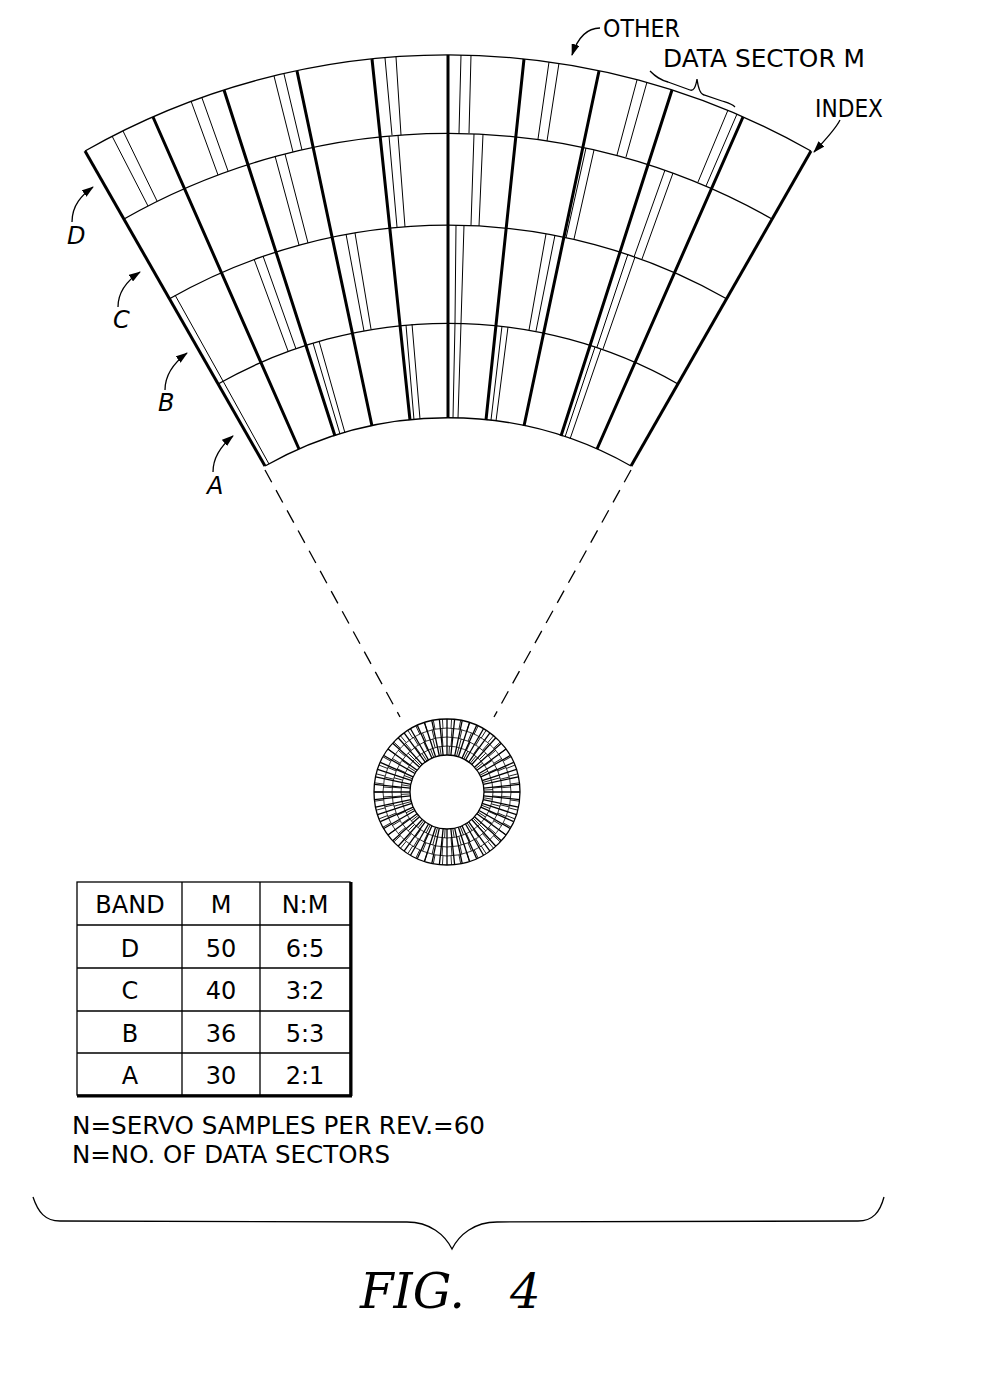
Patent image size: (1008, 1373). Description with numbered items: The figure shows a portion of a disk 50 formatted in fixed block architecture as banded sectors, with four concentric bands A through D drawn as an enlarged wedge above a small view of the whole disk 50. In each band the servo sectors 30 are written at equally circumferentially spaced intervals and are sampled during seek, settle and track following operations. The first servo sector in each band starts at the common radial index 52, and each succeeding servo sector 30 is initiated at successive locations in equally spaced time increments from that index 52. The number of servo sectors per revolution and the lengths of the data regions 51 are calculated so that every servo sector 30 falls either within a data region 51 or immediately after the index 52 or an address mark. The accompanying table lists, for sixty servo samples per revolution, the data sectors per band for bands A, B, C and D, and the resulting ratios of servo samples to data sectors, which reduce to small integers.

The servo sector 30 is at (363, 45).
The disk 50 is at (524, 739).
The data region 51 is at (178, 117).
The index mark 52 is at (756, 262).